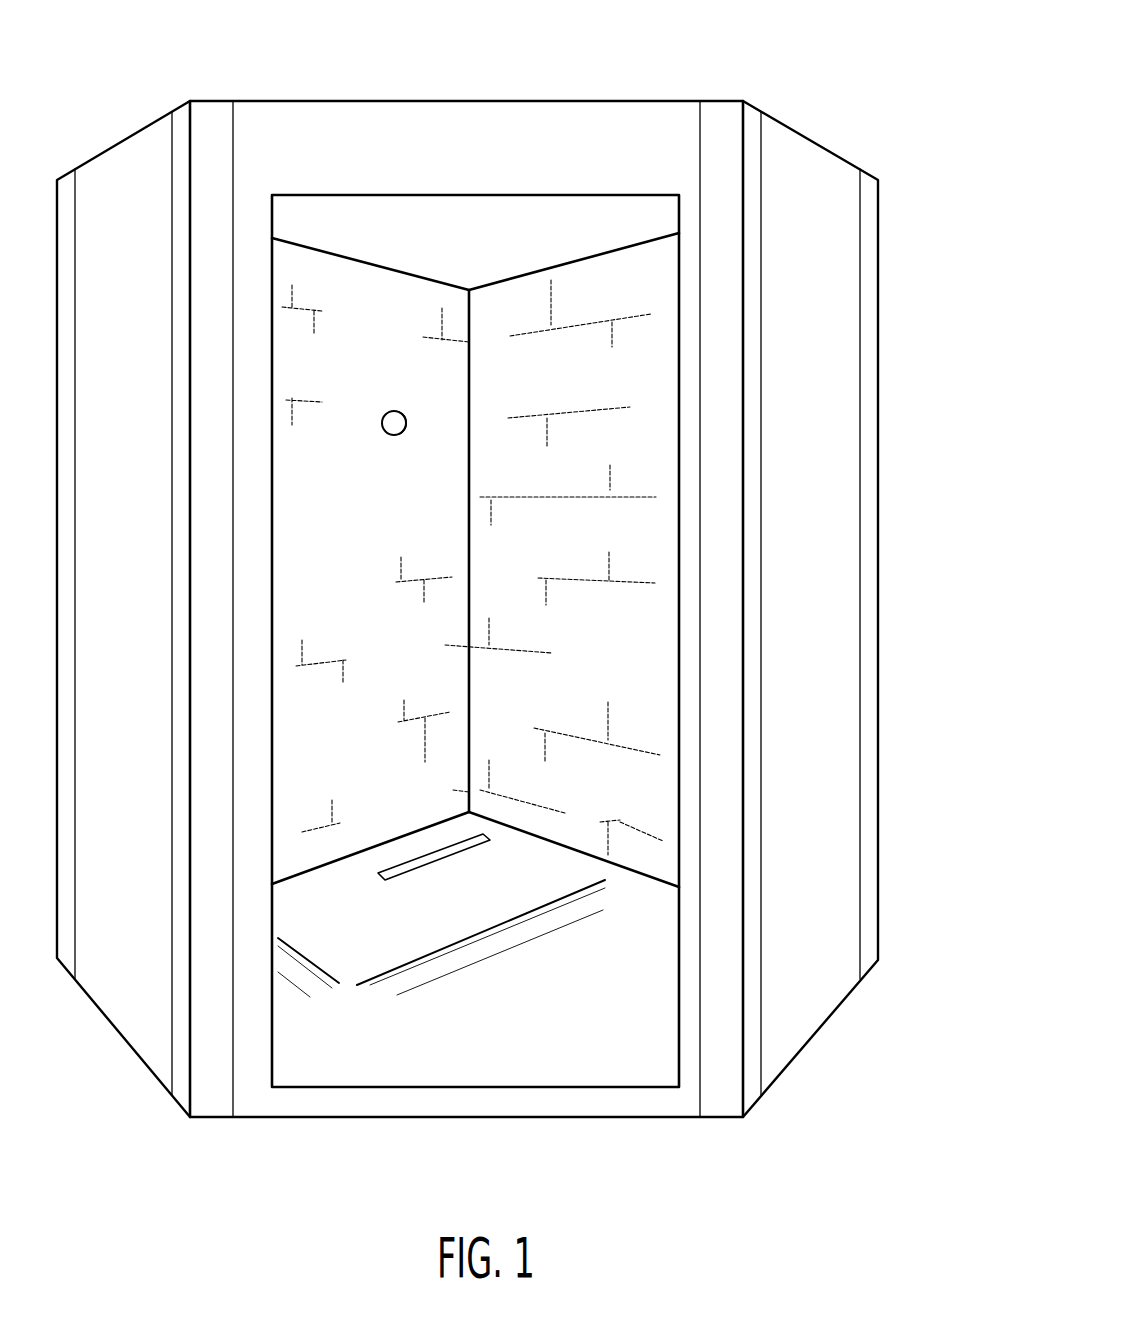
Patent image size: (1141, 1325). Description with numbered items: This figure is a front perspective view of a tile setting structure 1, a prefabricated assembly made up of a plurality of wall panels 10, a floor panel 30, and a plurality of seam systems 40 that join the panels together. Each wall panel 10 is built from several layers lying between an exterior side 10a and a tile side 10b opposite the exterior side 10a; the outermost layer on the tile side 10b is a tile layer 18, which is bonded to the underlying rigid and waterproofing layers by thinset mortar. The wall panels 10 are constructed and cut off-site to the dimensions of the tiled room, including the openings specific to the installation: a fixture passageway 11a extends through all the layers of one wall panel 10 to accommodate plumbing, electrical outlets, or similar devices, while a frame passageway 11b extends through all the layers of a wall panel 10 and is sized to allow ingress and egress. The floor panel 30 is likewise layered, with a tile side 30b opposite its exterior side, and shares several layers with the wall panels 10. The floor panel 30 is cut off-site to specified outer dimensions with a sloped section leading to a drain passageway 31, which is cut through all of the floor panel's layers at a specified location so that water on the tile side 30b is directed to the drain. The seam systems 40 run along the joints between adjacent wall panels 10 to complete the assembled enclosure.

The tile setting structure 1 is at (748, 27).
The wall panel 10 is at (500, 576).
The exterior side 10a is at (122, 178).
The tile side 10b is at (520, 296).
The fixture passageway 11a is at (388, 404).
The frame passageway 11b is at (585, 215).
The tile layer 18 is at (326, 558).
The floor panel 30 is at (483, 997).
The tile side 30b is at (598, 1057).
The drain passageway 31 is at (428, 868).
The seam system 40 is at (210, 118).